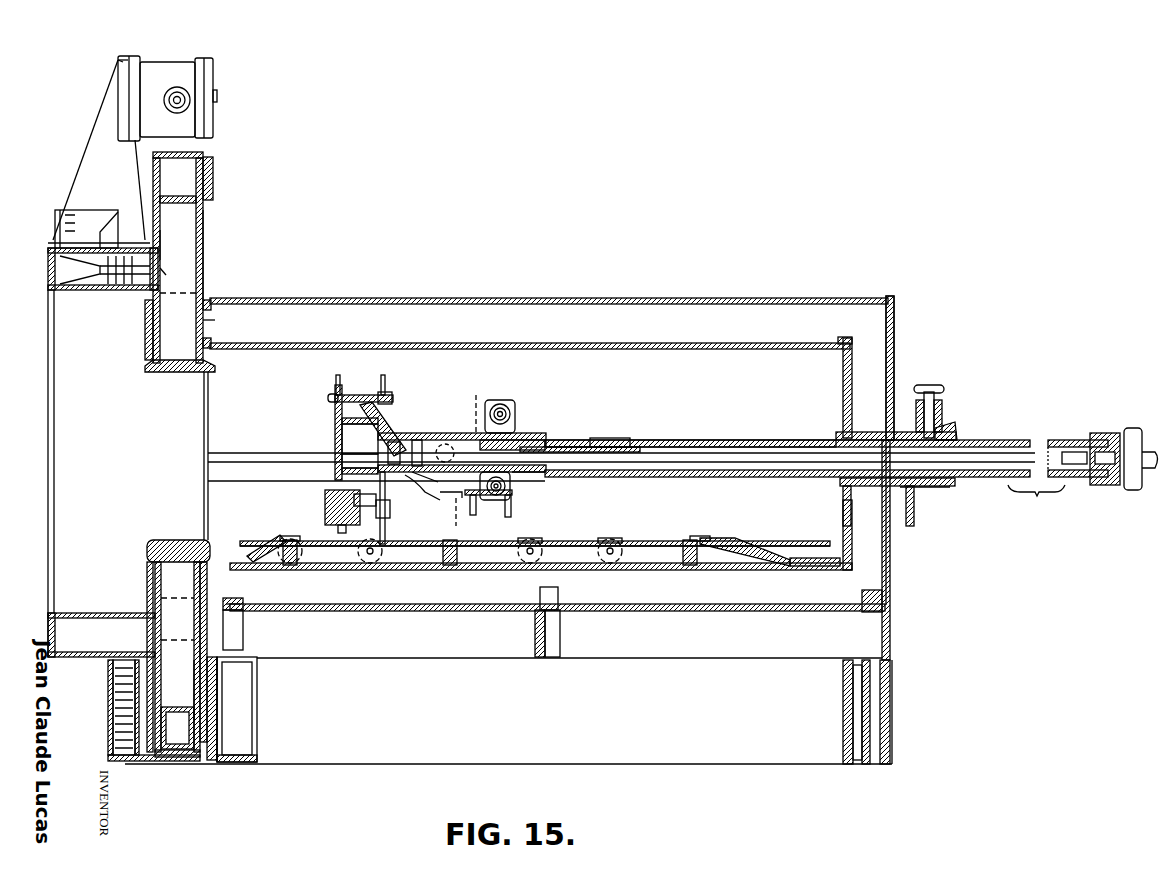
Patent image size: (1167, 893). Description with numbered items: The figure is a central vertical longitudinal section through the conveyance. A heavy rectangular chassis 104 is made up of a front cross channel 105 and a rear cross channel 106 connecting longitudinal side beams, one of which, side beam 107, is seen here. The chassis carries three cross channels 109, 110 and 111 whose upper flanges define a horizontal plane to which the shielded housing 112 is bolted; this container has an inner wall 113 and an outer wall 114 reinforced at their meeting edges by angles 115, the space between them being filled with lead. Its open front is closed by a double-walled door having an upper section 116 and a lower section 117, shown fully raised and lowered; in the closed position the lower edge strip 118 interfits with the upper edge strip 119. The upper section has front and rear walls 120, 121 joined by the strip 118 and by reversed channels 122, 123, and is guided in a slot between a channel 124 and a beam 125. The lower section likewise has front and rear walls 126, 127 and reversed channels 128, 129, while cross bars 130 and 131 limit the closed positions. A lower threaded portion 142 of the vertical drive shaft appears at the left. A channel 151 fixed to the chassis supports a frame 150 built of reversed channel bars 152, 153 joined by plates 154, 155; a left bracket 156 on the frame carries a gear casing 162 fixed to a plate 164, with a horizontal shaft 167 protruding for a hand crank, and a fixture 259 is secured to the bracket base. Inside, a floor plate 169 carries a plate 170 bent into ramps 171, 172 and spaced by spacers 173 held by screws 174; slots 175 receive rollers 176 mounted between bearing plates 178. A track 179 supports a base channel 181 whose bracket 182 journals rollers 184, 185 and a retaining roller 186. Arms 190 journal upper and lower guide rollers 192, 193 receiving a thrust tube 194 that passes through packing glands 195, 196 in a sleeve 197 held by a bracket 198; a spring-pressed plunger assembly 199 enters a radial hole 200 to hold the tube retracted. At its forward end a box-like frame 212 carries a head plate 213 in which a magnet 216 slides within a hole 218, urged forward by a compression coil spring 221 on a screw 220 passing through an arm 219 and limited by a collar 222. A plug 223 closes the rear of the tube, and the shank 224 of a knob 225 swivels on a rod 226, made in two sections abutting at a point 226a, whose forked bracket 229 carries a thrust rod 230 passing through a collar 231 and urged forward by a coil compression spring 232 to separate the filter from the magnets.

The chassis 104 is at (748, 780).
The front cross channel 105 is at (250, 728).
The rear cross channel 106 is at (843, 714).
The longitudinal side beam 107 is at (605, 753).
The cross channel 109 is at (243, 636).
The cross channel 110 is at (534, 636).
The cross channel 111 is at (880, 638).
The shielded housing 112 is at (900, 318).
The inner wall 113 is at (690, 352).
The outer wall 114 is at (655, 290).
The angle 115 is at (880, 318).
The upper door section 116 is at (205, 261).
The lower door section 117 is at (207, 763).
The lower edge strip 118 is at (224, 368).
The upper edge strip 119 is at (175, 540).
The front wall 120 is at (176, 245).
The rear wall 121 is at (198, 260).
The reversed channel 122 is at (196, 153).
The reversed channel 123 is at (176, 203).
The channel 124 is at (213, 320).
The beam 125 is at (147, 335).
The front wall 126 is at (170, 630).
The rear wall 127 is at (195, 682).
The reversed channel 128 is at (182, 757).
The reversed channel 129 is at (178, 728).
The cross bar 130 is at (213, 180).
The cross bar 131 is at (217, 726).
The lower threaded portion 142 is at (108, 694).
The frame 150 is at (100, 292).
The channel 151 is at (122, 761).
The reversed channel bar 152 is at (48, 268).
The reversed channel bar 153 is at (176, 275).
The metal plate 154 is at (115, 240).
The metal plate 155 is at (115, 296).
The left bracket 156 is at (90, 152).
The gear casing 162 is at (210, 78).
The plate 164 is at (118, 60).
The horizontal shaft 167 is at (176, 104).
The floor plate 169 is at (798, 556).
The plate 170 is at (650, 540).
The ramp 171 is at (262, 540).
The ramp 172 is at (748, 548).
The spacer 173 is at (305, 565).
The screw 174 is at (290, 570).
The slot 175 is at (548, 540).
The roller 176 is at (530, 538).
The bearing plate 178 is at (570, 572).
The track 179 is at (246, 480).
The base channel 181 is at (512, 500).
The bracket 182 is at (450, 510).
The roller 184 is at (428, 432).
The roller 185 is at (468, 410).
The retaining roller 186 is at (500, 515).
The arm 190 is at (515, 434).
The upper guide roller 192 is at (505, 390).
The lower guide roller 193 is at (510, 490).
The thrust tube 194 is at (694, 440).
The packing gland 195 is at (836, 436).
The packing gland 196 is at (957, 430).
The sleeve 197 is at (872, 487).
The bracket 198 is at (930, 495).
The spring-pressed plunger assembly 199 is at (940, 392).
The radial hole 200 is at (530, 444).
The box-like frame 212 is at (360, 436).
The head plate 213 is at (335, 432).
The magnet 216 is at (325, 502).
The hole 218 is at (338, 527).
The arm 219 is at (386, 520).
The screw 220 is at (392, 510).
The compression coil spring 221 is at (360, 467).
The collar 222 is at (425, 486).
The plug 223 is at (1118, 432).
The shank 224 is at (1098, 475).
The knob 225 is at (1145, 418).
The rod 226 is at (580, 452).
The abutting point 226a is at (570, 432).
The forked bracket 229 is at (393, 420).
The thrust rod 230 is at (328, 396).
The collar 231 is at (355, 365).
The coil compression spring 232 is at (396, 365).
The fixture 259 is at (80, 215).